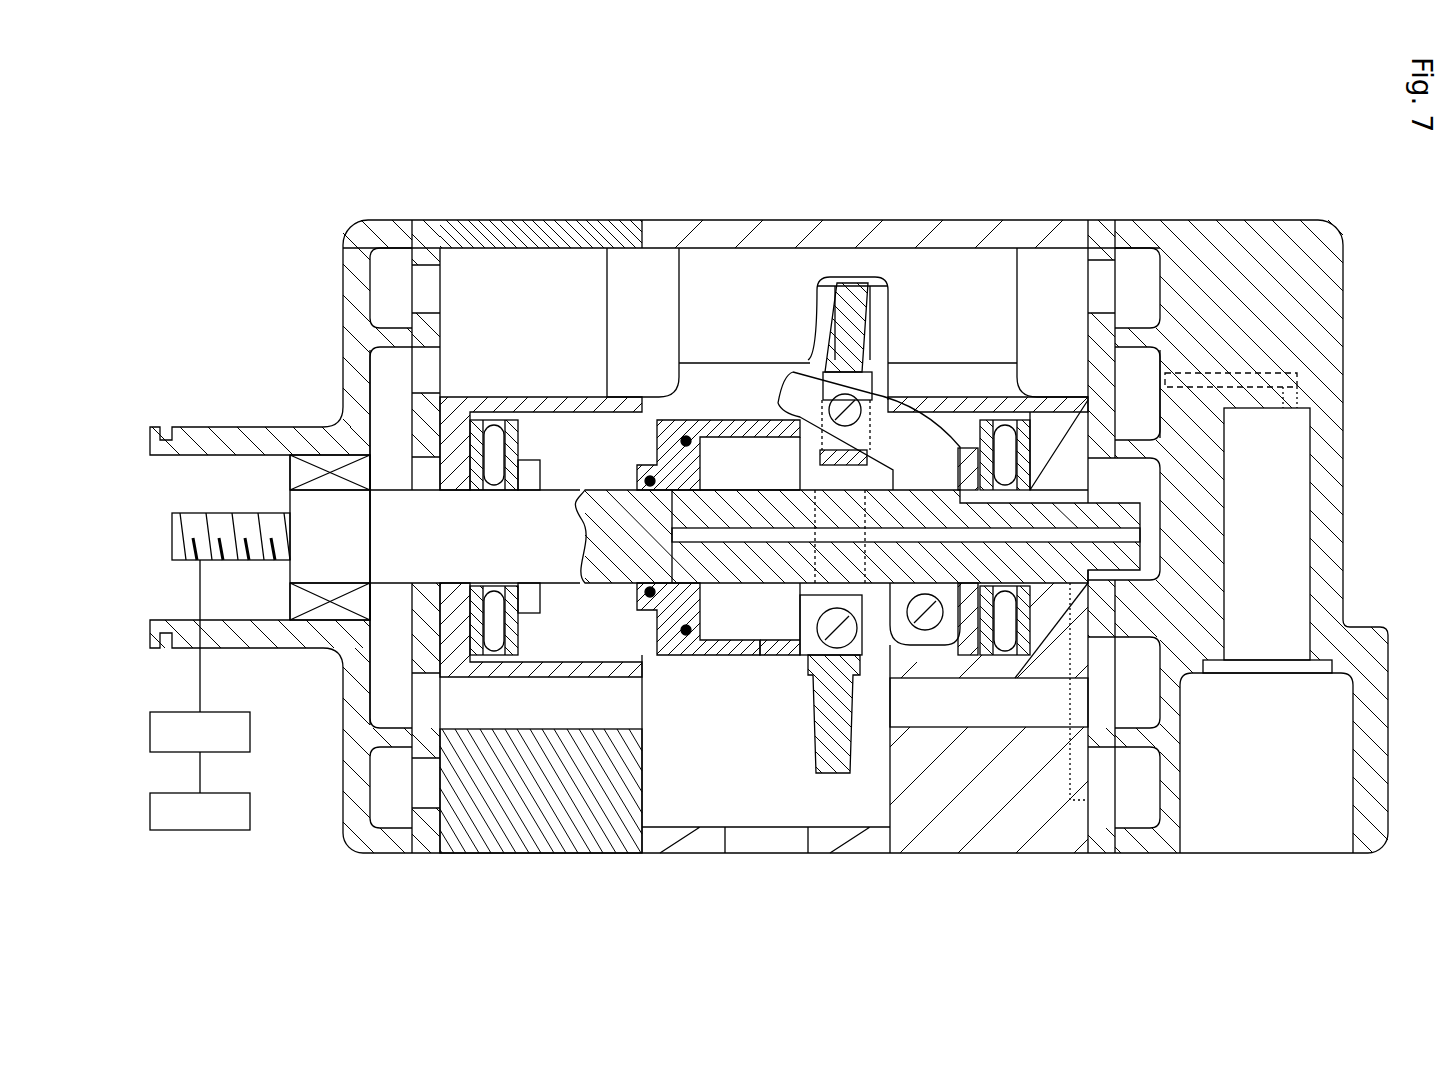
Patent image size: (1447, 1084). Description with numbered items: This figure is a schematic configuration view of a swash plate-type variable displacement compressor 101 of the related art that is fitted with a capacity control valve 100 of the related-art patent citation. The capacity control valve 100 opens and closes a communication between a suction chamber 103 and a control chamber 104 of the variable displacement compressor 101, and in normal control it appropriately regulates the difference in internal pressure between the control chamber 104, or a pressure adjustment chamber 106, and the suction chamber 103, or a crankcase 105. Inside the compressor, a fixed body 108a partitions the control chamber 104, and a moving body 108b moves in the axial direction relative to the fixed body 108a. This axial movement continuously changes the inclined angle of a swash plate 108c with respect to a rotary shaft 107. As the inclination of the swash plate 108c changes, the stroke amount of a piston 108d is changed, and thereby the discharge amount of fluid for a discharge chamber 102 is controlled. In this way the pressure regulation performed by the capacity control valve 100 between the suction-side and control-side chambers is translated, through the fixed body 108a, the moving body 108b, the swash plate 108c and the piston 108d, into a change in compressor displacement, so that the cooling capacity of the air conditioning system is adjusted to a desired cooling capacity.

The capacity control valve 100 is at (1254, 860).
The variable displacement compressor 101 is at (338, 170).
The discharge chamber 102 is at (387, 282).
The suction chamber 103 is at (387, 373).
The control chamber 104 is at (692, 420).
The crankcase 105 is at (690, 790).
The pressure adjustment chamber 106 is at (1145, 495).
The rotary shaft 107 is at (315, 510).
The fixed body 108a is at (700, 656).
The moving body 108b is at (775, 656).
The swash plate 108c is at (830, 765).
The piston 108d is at (935, 305).